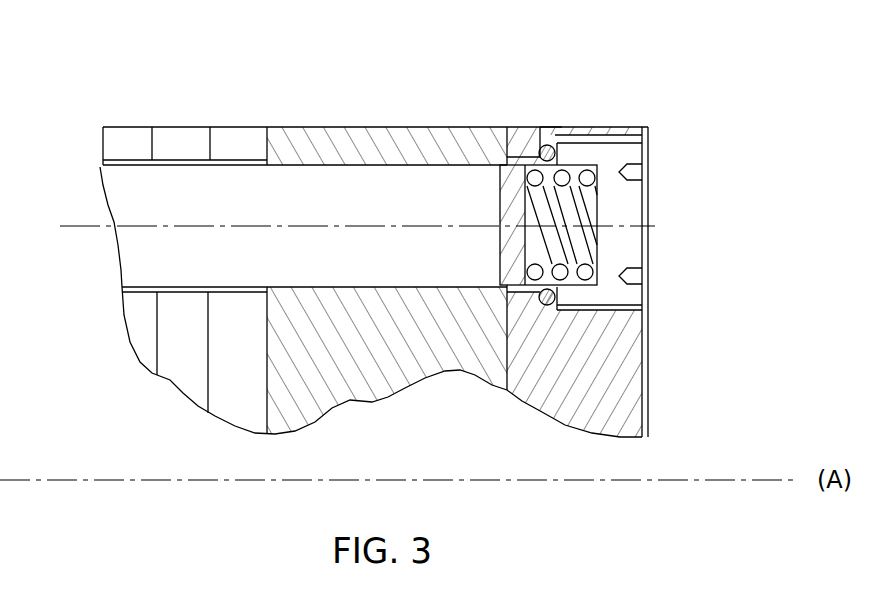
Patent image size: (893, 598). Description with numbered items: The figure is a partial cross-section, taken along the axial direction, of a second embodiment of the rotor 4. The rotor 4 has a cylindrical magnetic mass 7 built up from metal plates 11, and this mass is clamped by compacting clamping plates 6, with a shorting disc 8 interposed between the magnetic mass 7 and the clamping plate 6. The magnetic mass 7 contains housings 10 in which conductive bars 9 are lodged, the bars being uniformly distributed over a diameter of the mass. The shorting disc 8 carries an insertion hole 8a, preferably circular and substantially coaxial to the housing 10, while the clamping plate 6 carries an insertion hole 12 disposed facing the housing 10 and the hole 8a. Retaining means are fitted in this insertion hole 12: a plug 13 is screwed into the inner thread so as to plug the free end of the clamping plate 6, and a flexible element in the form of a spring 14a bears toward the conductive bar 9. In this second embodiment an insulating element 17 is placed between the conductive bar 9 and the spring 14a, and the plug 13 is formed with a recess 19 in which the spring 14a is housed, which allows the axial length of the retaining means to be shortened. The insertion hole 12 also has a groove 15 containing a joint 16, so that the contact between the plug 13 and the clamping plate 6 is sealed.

The rotor 4 is at (383, 90).
The clamping plate 6 is at (601, 114).
The magnetic mass 7 is at (197, 115).
The shorting disc 8 is at (340, 127).
The insertion hole 8a is at (478, 150).
The conductive bar 9 is at (130, 208).
The housing 10 is at (101, 148).
The metal plate 11 is at (163, 138).
The insertion hole 12 is at (560, 312).
The plug 13 is at (620, 158).
The spring 14a is at (577, 238).
The groove 15 is at (552, 126).
The joint 16 is at (547, 146).
The insulating element 17 is at (521, 150).
The recess 19 is at (600, 137).